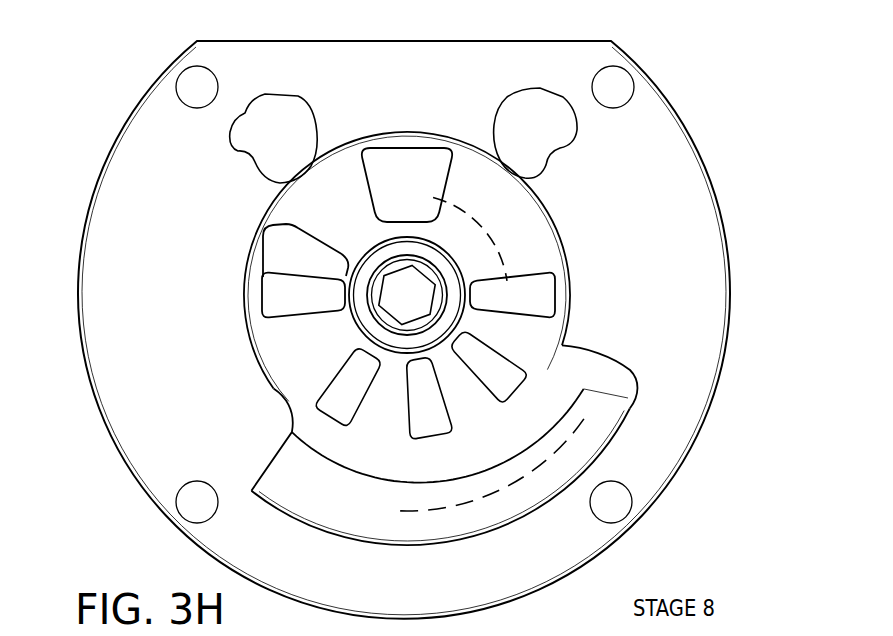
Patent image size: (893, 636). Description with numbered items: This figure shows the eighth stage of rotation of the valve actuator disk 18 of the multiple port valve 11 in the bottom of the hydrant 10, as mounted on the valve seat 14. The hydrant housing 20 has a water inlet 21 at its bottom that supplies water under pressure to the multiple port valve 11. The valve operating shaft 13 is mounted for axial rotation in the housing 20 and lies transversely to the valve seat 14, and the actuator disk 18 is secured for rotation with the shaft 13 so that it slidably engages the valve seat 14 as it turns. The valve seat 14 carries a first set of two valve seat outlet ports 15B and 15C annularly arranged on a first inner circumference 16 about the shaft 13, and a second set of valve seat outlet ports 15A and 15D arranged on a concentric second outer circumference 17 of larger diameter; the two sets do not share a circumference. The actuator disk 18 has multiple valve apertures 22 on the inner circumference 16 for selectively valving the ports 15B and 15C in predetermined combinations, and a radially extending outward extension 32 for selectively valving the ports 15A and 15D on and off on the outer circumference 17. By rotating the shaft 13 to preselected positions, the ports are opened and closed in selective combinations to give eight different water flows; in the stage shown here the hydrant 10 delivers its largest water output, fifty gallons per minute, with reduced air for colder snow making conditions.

The hydrant 10 is at (150, 216).
The multiple port valve 11 is at (565, 235).
The valve operating shaft 13 is at (407, 297).
The valve seat 14 is at (413, 182).
The valve seat outlet port 15A is at (253, 127).
The valve seat outlet port 15B is at (502, 313).
The valve seat outlet port 15C is at (275, 304).
The valve seat outlet port 15D is at (540, 163).
The first inner circumference 16 is at (488, 233).
The second outer circumference 17 is at (487, 497).
The valve actuator disk 18 is at (307, 368).
The hydrant housing 20 is at (602, 550).
The water inlet 21 is at (275, 366).
The valve apertures 22 is at (312, 238).
The radially extending outward extension 32 is at (600, 422).